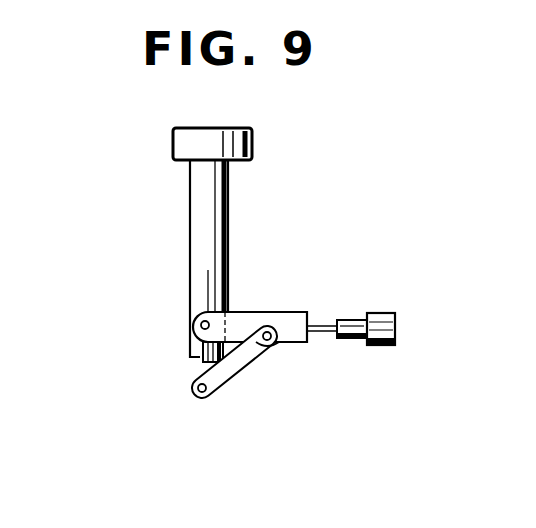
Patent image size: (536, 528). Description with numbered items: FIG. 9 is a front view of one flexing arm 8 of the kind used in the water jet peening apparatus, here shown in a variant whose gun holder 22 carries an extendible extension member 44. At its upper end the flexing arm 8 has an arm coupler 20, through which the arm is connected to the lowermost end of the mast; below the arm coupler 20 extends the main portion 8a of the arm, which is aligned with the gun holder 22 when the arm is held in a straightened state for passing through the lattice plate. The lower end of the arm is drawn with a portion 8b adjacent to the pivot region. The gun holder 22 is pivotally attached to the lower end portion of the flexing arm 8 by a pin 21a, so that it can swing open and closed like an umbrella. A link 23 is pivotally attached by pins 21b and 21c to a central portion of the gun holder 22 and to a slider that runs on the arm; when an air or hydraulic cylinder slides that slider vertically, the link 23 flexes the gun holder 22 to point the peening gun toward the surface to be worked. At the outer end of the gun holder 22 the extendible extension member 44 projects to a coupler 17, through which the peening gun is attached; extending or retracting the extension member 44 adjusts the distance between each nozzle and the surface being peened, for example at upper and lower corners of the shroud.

The flexing arm 8 is at (180, 251).
The main portion 8a is at (228, 213).
The shaft lower end 8b is at (203, 357).
The arm coupler 20 is at (252, 147).
The gun holder 22 is at (258, 313).
The pin 21a is at (192, 314).
The pin 21b is at (278, 344).
The pin 21c is at (196, 392).
The link 23 is at (223, 375).
The extendible extension member 44 is at (323, 334).
The coupler 17 is at (375, 320).